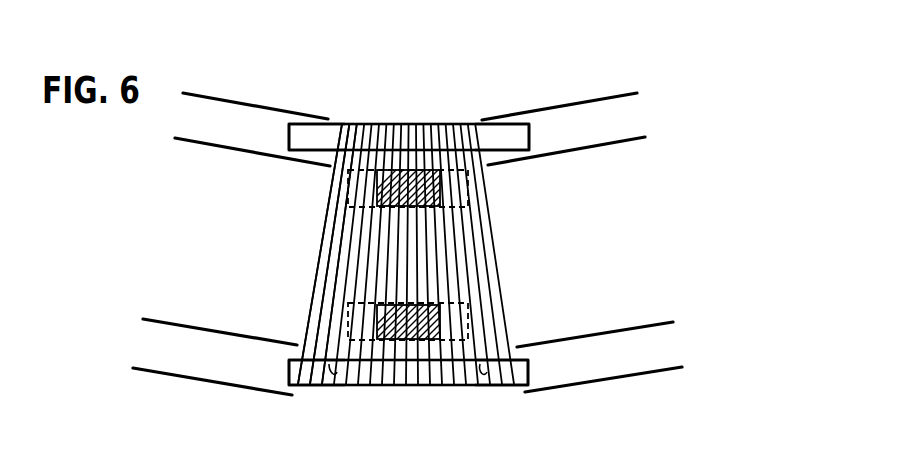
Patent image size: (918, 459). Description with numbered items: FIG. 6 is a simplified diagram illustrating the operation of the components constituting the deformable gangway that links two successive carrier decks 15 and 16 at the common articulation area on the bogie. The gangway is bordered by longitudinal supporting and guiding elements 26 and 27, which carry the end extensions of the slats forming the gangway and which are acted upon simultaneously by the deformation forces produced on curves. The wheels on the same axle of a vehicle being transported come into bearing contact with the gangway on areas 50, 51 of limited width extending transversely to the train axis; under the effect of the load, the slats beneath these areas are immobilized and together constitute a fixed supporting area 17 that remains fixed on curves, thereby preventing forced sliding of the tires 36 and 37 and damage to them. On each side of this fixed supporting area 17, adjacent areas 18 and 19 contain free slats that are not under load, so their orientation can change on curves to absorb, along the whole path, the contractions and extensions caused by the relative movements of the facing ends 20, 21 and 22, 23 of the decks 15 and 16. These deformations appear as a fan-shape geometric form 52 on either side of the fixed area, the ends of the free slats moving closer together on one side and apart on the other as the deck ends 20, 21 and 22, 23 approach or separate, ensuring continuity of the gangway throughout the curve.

The carrier deck 15 is at (167, 233).
The carrier deck 16 is at (631, 236).
The fixed supporting area 17 is at (443, 115).
The adjacent area 18 is at (334, 372).
The adjacent area 19 is at (484, 372).
The end of deck 20 is at (297, 372).
The end of deck 21 is at (532, 370).
The end of deck 22 is at (322, 136).
The end of deck 23 is at (513, 137).
The longitudinal supporting and guiding element 26 is at (410, 370).
The longitudinal supporting and guiding element 27 is at (408, 140).
The tire 36 is at (517, 318).
The tire 37 is at (352, 187).
The bearing contact area 50 is at (408, 305).
The bearing contact area 51 is at (386, 200).
The fan-shape geometric form 52 is at (302, 282).